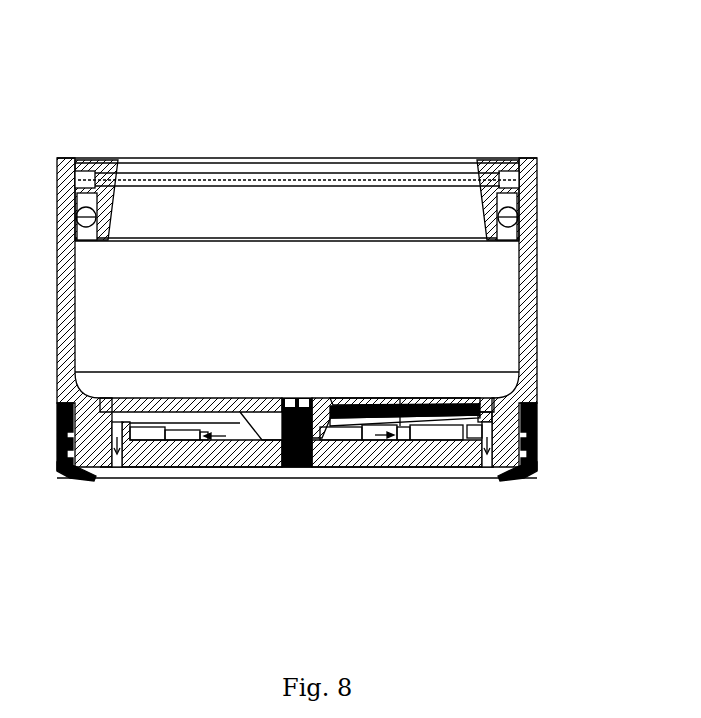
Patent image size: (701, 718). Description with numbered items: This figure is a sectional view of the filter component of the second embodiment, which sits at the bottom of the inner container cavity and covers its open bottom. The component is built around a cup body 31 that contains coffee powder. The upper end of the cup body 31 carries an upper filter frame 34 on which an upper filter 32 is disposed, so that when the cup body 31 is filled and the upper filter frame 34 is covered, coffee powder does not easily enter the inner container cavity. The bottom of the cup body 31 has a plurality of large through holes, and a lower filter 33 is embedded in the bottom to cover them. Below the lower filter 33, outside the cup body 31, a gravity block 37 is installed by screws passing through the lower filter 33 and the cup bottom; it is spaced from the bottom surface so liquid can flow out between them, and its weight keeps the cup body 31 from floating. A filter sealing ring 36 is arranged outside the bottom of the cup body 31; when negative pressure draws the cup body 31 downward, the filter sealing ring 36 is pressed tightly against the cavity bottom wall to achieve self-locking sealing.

The cup body 31 is at (530, 310).
The upper filter 32 is at (118, 178).
The lower filter 33 is at (352, 415).
The upper filter frame 34 is at (498, 178).
The filter sealing ring 36 is at (545, 437).
The gravity block 37 is at (333, 455).